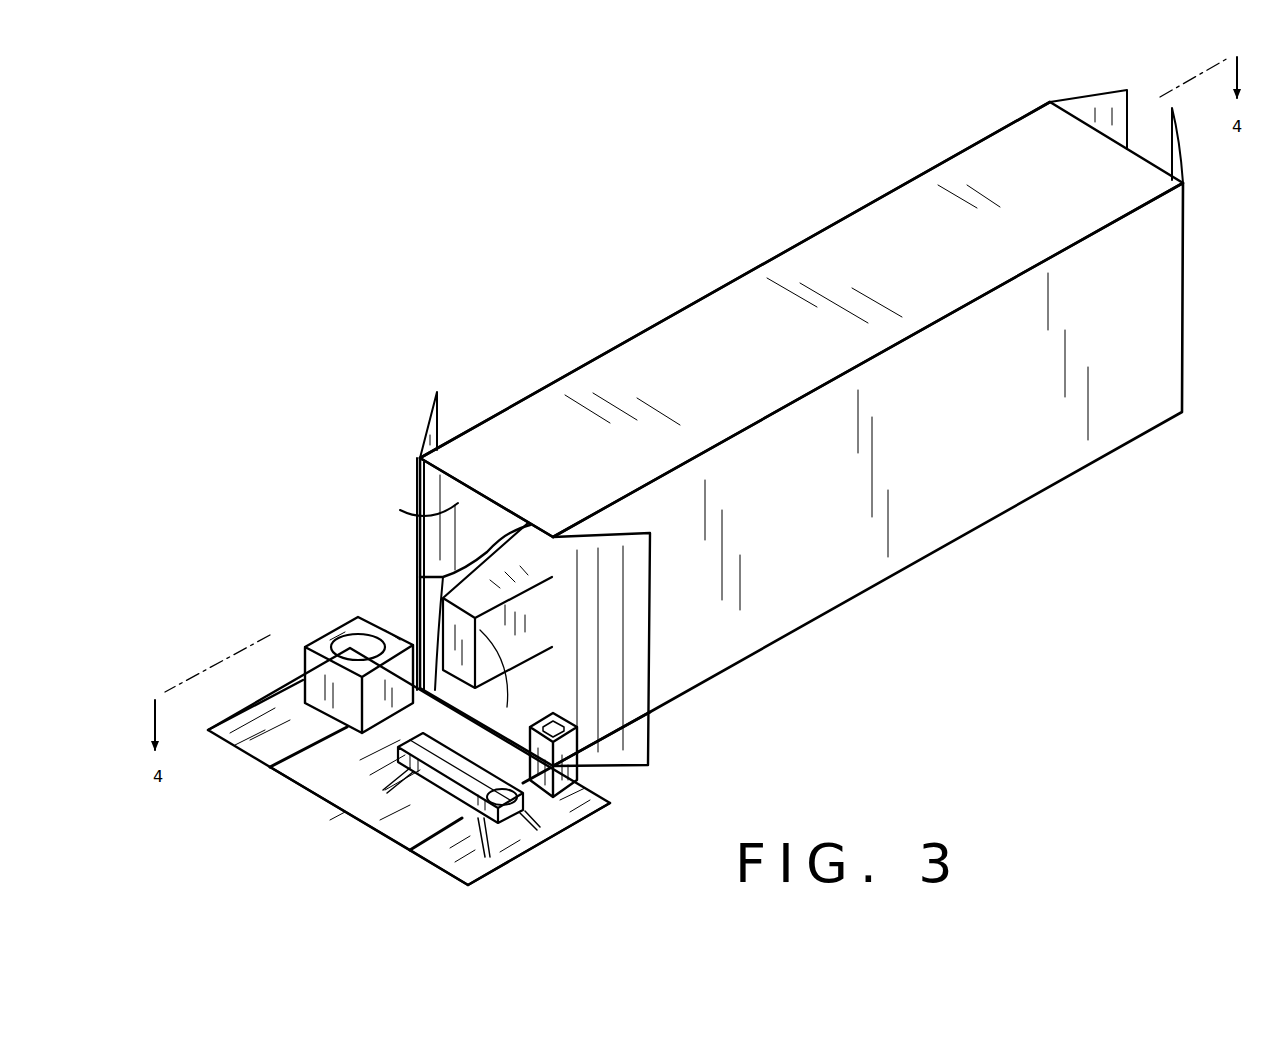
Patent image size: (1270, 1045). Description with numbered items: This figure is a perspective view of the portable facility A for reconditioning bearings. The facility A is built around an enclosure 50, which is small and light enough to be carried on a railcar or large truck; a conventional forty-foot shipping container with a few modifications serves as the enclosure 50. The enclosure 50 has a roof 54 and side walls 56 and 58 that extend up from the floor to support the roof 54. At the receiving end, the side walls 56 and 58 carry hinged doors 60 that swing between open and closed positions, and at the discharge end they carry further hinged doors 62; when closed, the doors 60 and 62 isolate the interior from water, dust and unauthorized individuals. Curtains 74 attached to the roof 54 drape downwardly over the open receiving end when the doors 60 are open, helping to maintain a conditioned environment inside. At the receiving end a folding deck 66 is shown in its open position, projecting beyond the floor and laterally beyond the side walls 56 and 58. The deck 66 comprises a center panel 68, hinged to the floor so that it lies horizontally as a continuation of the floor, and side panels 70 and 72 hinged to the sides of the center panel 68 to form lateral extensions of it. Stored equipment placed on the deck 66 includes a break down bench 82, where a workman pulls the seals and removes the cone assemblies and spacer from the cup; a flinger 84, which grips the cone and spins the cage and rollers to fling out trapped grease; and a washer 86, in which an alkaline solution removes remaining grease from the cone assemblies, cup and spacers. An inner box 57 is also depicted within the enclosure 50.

The facility A is at (532, 356).
The enclosure 50 is at (665, 315).
The roof 54 is at (838, 270).
The side wall 56 is at (618, 345).
The side wall 58 is at (958, 483).
The doors 60 is at (425, 437).
The doors 62 is at (1112, 118).
The curtains 74 is at (455, 517).
The inner box 57 is at (440, 600).
The deck 66 is at (323, 805).
The side panel 70 is at (260, 730).
The center panel 68 is at (405, 812).
The side panel 72 is at (517, 845).
The washer 86 is at (322, 640).
The flinger 84 is at (577, 770).
The break down bench 82 is at (460, 795).